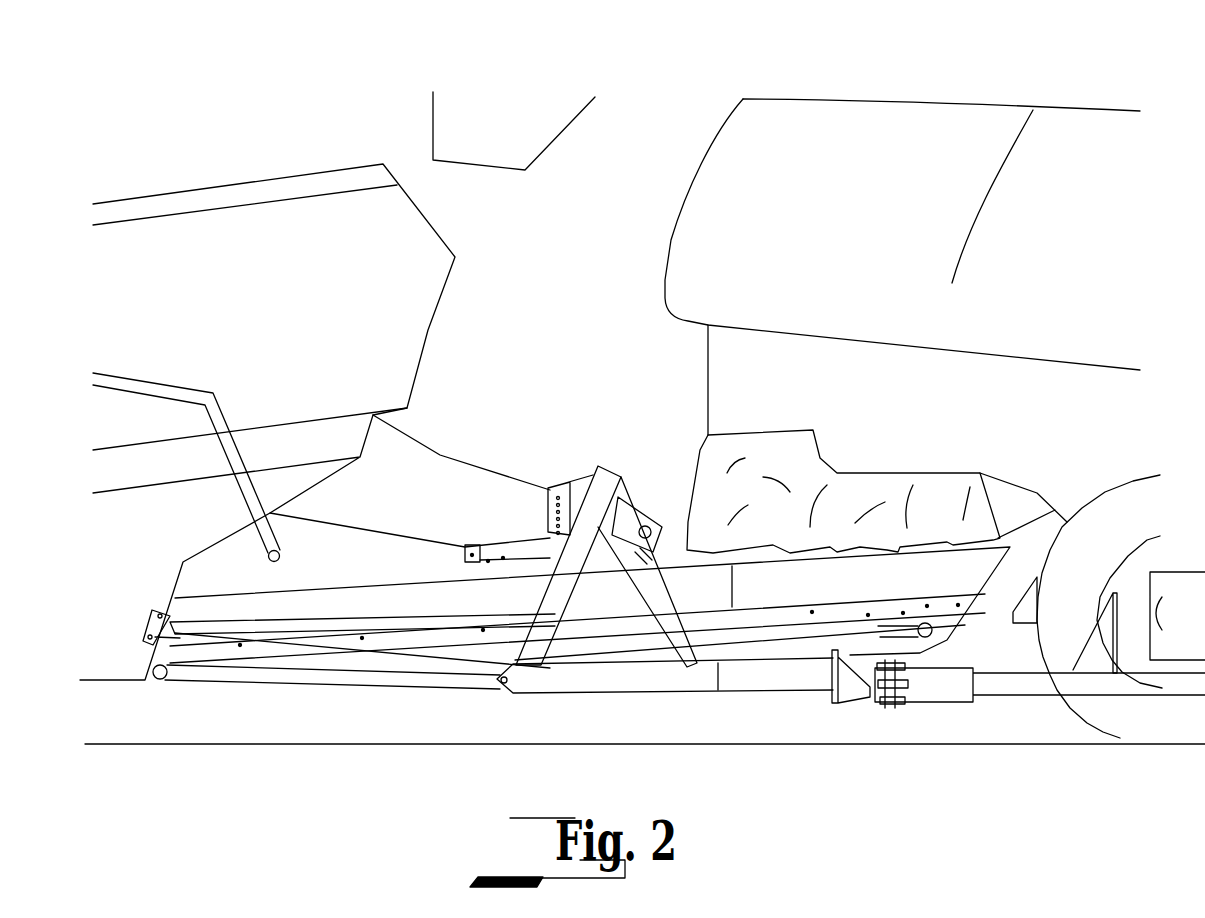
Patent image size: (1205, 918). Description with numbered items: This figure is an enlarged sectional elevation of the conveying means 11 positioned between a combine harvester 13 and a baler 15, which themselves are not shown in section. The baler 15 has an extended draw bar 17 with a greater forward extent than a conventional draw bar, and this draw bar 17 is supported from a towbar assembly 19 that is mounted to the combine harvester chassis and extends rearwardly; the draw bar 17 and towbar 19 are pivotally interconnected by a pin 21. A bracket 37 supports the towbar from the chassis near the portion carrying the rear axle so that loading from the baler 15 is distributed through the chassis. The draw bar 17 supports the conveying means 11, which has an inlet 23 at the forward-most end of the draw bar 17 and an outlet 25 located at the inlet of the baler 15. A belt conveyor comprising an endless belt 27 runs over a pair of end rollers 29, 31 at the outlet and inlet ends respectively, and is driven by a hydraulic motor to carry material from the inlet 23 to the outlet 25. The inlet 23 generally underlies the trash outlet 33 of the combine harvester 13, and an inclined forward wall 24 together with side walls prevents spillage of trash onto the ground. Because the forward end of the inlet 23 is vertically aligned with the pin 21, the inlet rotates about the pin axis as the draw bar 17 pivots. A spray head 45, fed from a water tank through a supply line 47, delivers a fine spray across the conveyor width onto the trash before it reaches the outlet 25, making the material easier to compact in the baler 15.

The conveying means 11 is at (438, 685).
The combine harvester 13 is at (877, 98).
The baler 15 is at (311, 165).
The draw bar 17 is at (870, 693).
The towbar assembly 19 is at (960, 695).
The pin 21 is at (897, 703).
The inlet 23 is at (940, 595).
The inclined forward wall 24 is at (929, 568).
The outlet 25 is at (168, 648).
The endless belt 27 is at (270, 660).
The end roller 29 is at (164, 680).
The end roller 31 is at (905, 625).
The trash outlet 33 is at (777, 548).
The bracket 37 is at (698, 590).
The spray head 45 is at (283, 558).
The supply line 47 is at (177, 398).